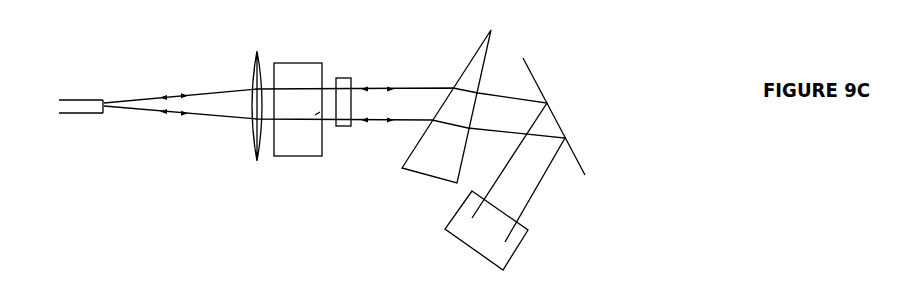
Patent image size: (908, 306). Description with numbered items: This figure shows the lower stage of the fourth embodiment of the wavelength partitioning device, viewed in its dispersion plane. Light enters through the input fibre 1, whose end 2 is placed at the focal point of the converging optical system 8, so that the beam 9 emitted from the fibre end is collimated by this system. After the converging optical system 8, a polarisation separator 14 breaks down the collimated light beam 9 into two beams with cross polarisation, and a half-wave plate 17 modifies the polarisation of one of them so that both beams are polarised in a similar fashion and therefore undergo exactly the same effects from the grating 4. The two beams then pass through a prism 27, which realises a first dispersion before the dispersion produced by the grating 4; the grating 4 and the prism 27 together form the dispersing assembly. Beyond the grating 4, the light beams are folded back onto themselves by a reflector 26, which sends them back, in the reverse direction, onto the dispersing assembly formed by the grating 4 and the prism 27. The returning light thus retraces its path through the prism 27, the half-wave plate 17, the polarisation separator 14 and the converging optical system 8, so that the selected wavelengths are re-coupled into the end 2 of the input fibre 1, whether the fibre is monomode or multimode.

The input fibre 1 is at (75, 105).
The end of the input fibre 2 is at (104, 100).
The beam 9 is at (196, 98).
The converging optical system 8 is at (258, 67).
The polarisation separator 14 is at (300, 72).
The λ/2 plate 17 is at (345, 82).
The prism 27 is at (473, 72).
The grating 4 is at (533, 73).
The reflector 26 is at (508, 248).